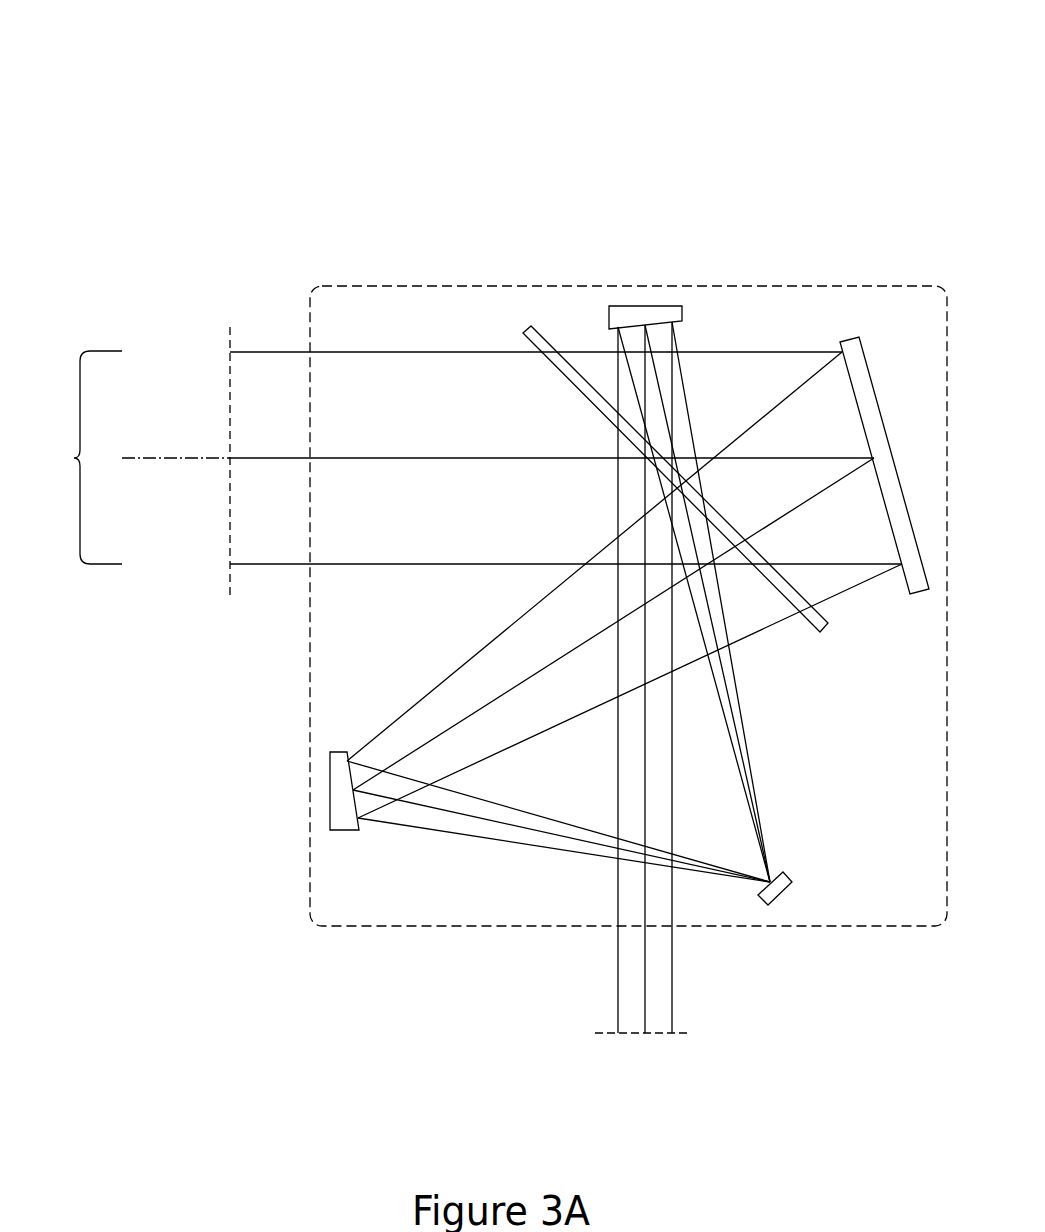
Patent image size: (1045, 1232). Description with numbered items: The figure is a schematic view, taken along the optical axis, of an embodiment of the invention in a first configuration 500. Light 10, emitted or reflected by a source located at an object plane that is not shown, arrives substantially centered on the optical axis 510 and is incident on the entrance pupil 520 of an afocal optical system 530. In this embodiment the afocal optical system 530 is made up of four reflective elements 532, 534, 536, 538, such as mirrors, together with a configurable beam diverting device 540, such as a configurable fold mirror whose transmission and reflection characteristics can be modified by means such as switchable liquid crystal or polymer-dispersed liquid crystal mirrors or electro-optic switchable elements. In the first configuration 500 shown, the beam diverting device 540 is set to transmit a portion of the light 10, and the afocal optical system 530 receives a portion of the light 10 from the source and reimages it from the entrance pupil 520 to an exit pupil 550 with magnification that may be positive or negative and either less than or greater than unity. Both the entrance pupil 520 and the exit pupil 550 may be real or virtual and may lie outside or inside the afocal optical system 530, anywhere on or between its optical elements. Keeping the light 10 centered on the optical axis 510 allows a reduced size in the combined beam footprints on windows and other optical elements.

The first configuration 500 is at (112, 66).
The light 10 is at (74, 458).
The optical axis 510 is at (177, 459).
The entrance pupil 520 is at (230, 327).
The afocal optical system 530 is at (422, 286).
The reflective element 532 is at (866, 355).
The reflective element 534 is at (345, 832).
The reflective element 536 is at (784, 893).
The reflective element 538 is at (682, 311).
The configurable beam diverting device 540 is at (829, 634).
The exit pupil 550 is at (690, 1033).